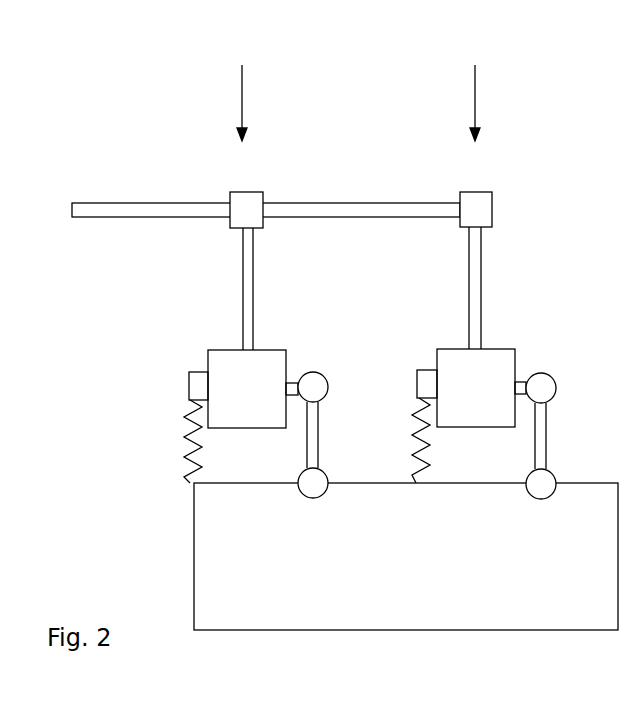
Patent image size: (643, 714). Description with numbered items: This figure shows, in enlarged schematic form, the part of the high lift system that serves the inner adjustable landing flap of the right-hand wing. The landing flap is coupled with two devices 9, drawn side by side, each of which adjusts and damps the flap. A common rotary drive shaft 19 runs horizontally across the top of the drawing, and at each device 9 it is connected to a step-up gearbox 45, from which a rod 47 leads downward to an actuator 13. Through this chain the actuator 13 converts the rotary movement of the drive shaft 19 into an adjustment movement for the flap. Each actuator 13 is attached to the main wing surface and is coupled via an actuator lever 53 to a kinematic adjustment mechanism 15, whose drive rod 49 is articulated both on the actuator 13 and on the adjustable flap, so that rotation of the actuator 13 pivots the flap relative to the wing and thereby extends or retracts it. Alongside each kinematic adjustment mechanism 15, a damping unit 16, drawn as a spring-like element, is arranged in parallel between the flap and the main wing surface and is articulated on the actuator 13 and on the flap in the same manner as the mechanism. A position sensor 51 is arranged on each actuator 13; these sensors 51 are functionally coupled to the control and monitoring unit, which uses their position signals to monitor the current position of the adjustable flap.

The device 9 is at (357, 87).
The rotary drive shaft 19 is at (330, 203).
The step-up gearbox 45 is at (245, 192).
The rod 47 is at (248, 249).
The actuator 13 is at (361, 388).
The position sensor 51 is at (197, 383).
The damping unit 16 is at (187, 442).
The actuator lever 53 is at (288, 378).
The drive rod 49 is at (315, 425).
The kinematic adjustment mechanism 15 is at (396, 405).